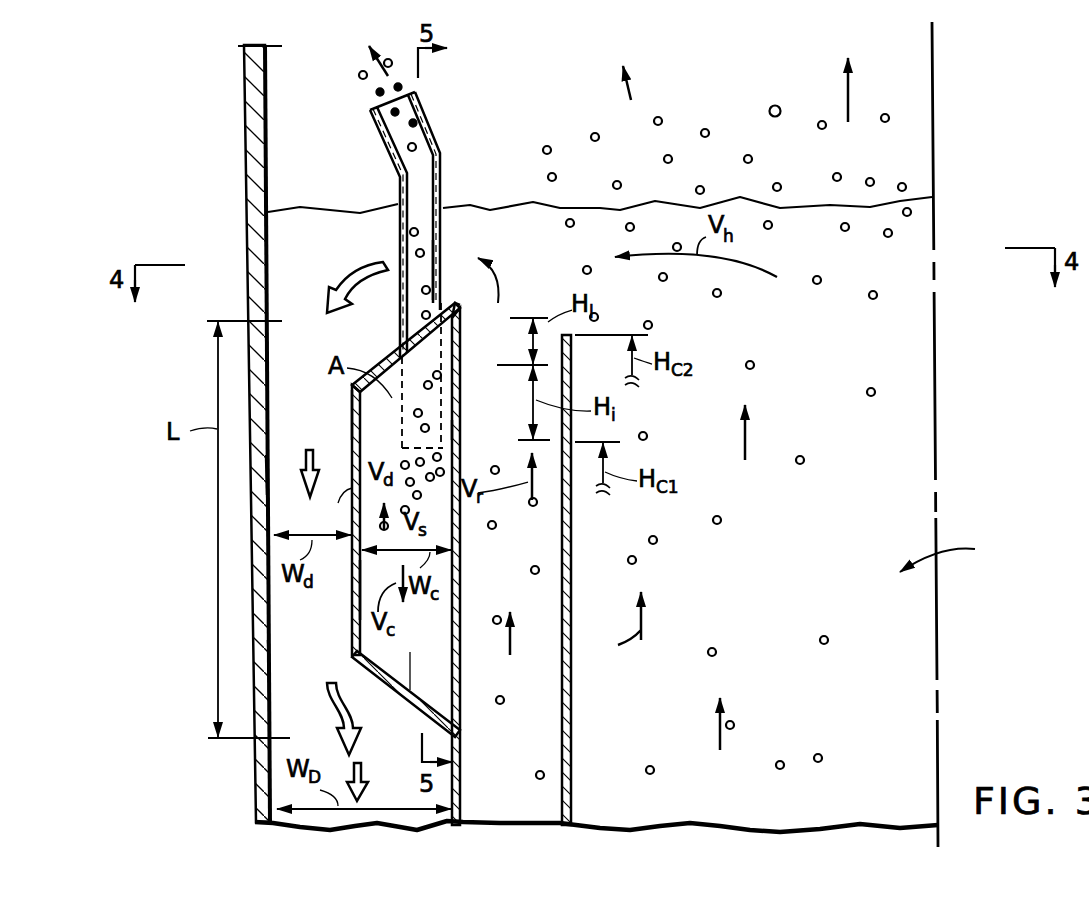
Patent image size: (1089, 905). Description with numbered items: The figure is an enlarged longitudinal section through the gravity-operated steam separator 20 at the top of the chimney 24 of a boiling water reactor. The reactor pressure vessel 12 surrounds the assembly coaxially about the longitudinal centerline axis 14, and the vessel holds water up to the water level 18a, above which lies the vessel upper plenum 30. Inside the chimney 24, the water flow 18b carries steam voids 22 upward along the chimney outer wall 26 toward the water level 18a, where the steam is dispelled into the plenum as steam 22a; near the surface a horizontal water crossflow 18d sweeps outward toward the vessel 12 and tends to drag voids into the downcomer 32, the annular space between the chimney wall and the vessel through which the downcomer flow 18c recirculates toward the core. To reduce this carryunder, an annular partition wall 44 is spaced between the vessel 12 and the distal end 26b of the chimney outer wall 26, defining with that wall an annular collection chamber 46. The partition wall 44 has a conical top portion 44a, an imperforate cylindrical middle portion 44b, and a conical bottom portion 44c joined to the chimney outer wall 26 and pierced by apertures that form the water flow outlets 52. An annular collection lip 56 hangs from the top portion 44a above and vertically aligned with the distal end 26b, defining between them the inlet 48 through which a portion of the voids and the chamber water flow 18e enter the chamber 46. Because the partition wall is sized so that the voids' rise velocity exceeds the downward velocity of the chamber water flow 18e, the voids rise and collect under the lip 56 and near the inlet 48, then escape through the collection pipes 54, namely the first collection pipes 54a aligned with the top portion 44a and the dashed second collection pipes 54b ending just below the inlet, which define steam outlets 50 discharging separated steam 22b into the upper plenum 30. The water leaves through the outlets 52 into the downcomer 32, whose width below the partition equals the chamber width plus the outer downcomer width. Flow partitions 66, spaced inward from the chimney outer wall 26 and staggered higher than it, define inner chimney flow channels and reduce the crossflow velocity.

The reactor pressure vessel 12 is at (248, 166).
The longitudinal centerline axis 14 is at (940, 742).
The water level 18a is at (303, 207).
The water flow 18b is at (520, 668).
The downcomer flow 18c is at (300, 470).
The water crossflow 18d is at (758, 274).
The chamber water flow 18e is at (357, 600).
The steam separator 20 is at (305, 660).
The steam voids 22 is at (492, 530).
The steam 22a is at (640, 84).
The separated steam 22b is at (370, 63).
The chimney 24 is at (957, 554).
The chimney outer wall 26 is at (462, 792).
The distal end 26b is at (393, 428).
The vessel upper plenum 30 is at (531, 102).
The downcomer 32 is at (330, 822).
The partition wall 44 is at (355, 590).
The top portion 44a is at (394, 358).
The middle portion 44b is at (313, 490).
The bottom portion 44c is at (354, 719).
The collection chamber 46 is at (448, 653).
The inlet 48 is at (447, 378).
The steam outlet 50 is at (469, 284).
The water flow outlet 52 is at (368, 745).
The collection pipes 54 is at (443, 176).
The first collection pipes 54a is at (441, 250).
The second collection pipes 54b is at (355, 429).
The collection lip 56 is at (462, 322).
The flow partitions 66 is at (573, 810).